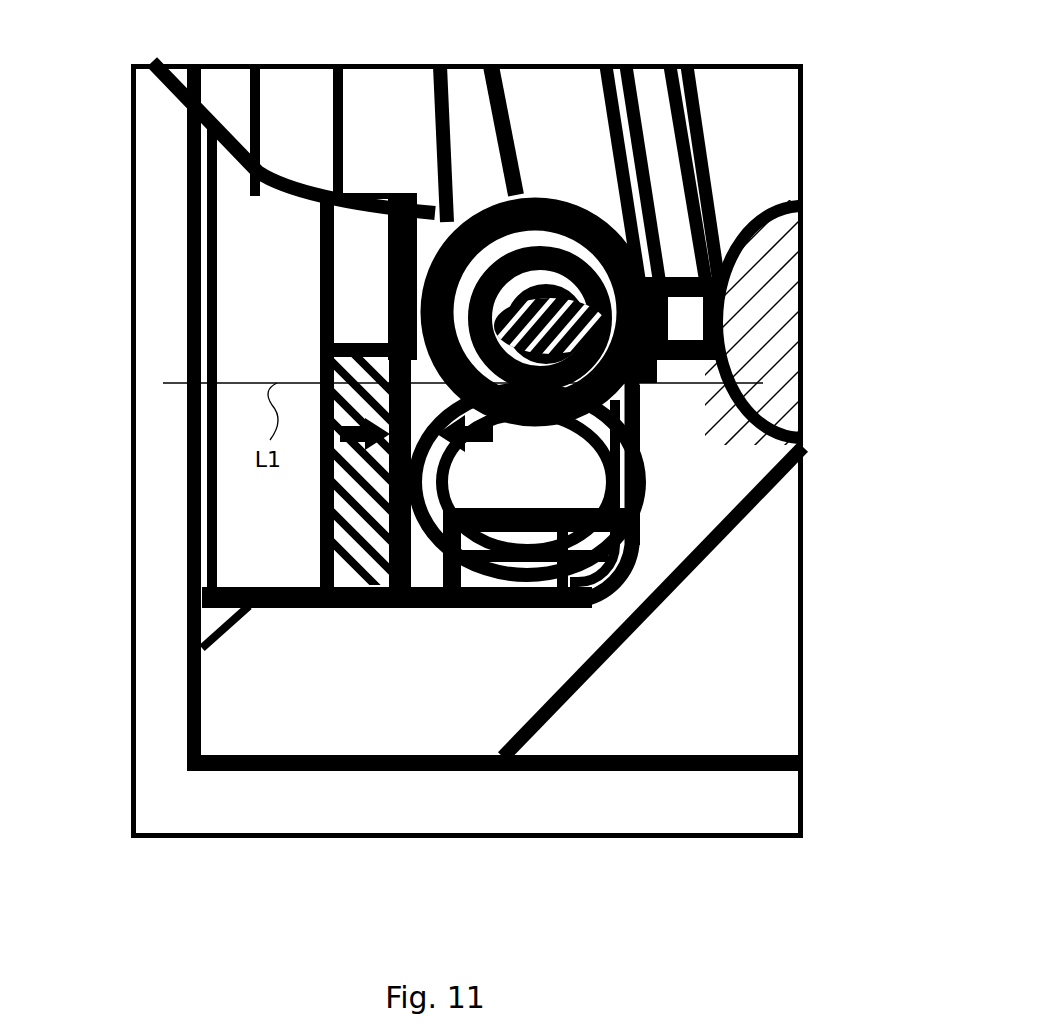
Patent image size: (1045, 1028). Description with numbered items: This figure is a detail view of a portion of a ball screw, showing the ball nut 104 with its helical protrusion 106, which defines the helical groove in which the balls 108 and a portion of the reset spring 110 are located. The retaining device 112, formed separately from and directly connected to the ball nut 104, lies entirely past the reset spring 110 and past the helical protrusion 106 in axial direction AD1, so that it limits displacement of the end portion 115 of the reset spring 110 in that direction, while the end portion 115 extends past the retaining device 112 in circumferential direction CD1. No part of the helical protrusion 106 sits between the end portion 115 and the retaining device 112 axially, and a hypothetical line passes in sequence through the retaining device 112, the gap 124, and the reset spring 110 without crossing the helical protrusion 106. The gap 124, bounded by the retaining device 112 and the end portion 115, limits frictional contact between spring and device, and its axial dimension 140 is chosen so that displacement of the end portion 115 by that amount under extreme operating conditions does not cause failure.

The ball nut 104 is at (313, 771).
The helical protrusion 106 is at (677, 370).
The balls 108 is at (770, 305).
The reset spring 110 is at (550, 190).
The retaining device 112 is at (325, 533).
The end portion of reset spring 115 is at (646, 412).
The gap 124 is at (418, 333).
The axial dimension 140 is at (362, 440).